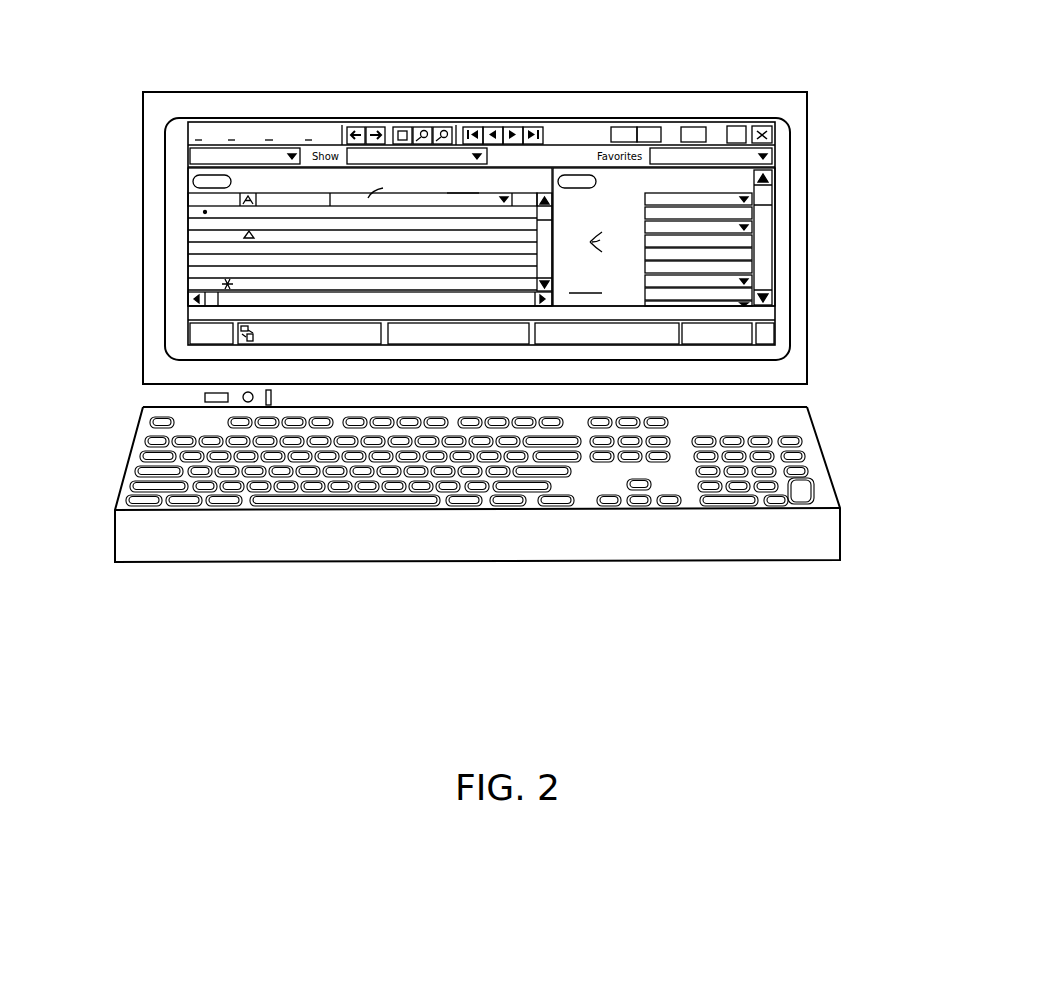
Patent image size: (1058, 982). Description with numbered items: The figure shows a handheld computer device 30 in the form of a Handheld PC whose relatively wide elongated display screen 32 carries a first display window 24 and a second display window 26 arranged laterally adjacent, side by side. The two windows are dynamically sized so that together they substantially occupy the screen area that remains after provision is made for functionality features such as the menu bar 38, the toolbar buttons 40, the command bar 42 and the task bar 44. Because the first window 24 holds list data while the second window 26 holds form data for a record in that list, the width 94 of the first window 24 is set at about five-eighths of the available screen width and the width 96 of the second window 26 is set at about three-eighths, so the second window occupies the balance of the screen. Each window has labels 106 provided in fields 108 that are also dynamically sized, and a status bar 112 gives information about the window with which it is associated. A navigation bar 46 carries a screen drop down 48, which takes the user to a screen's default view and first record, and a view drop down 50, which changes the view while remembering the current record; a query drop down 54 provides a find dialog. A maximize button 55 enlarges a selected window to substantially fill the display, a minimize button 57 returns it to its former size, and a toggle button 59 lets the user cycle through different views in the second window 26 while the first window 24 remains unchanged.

The handheld computer device 30 is at (812, 183).
The display screen 32 is at (178, 215).
The first display window 24 is at (213, 257).
The second display window 26 is at (742, 258).
The menu bar 38 is at (252, 133).
The toolbar buttons 40 is at (555, 133).
The command bar 42 is at (690, 79).
The task bar 44 is at (521, 332).
The navigation bar 46 is at (776, 158).
The screen drop down 48 is at (285, 153).
The view drop down 50 is at (437, 158).
The query drop down 54 is at (713, 157).
The maximize button 55 is at (620, 126).
The minimize button 57 is at (650, 126).
The toggle button 59 is at (700, 126).
The width of the first window 94 is at (324, 391).
The width of the second window 96 is at (703, 279).
The labels 106 is at (485, 214).
The fields 108 is at (524, 234).
The status bar 112 is at (332, 315).